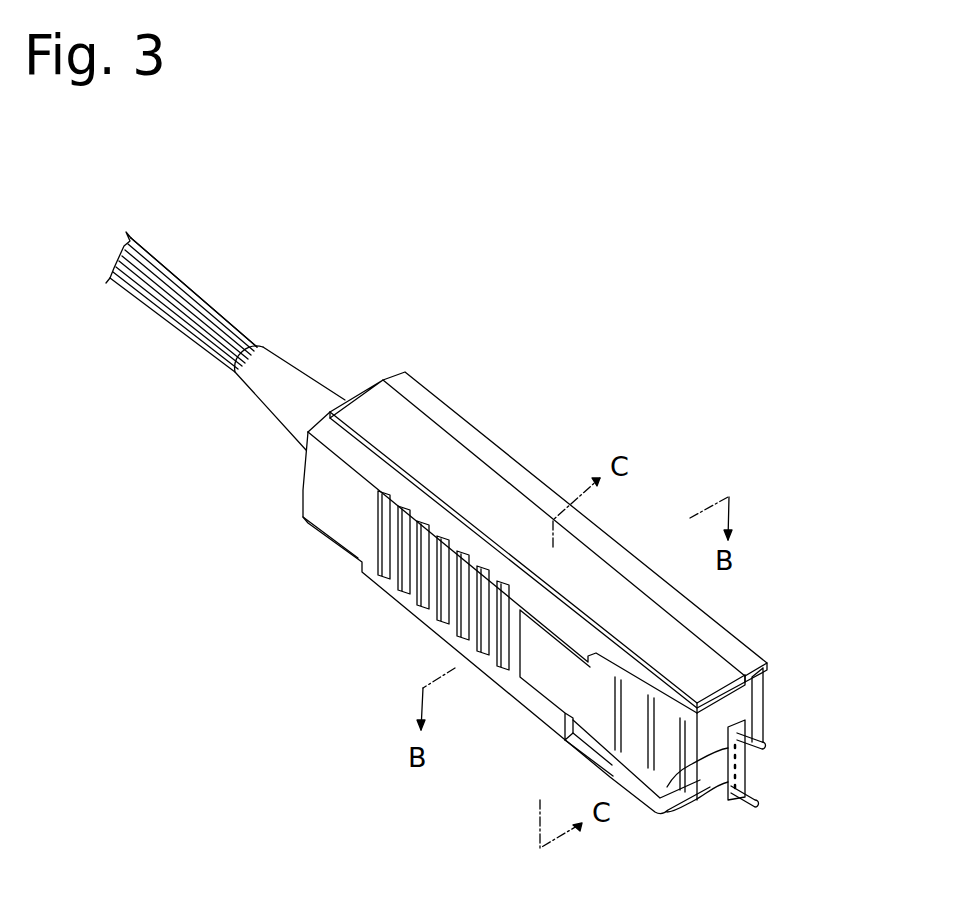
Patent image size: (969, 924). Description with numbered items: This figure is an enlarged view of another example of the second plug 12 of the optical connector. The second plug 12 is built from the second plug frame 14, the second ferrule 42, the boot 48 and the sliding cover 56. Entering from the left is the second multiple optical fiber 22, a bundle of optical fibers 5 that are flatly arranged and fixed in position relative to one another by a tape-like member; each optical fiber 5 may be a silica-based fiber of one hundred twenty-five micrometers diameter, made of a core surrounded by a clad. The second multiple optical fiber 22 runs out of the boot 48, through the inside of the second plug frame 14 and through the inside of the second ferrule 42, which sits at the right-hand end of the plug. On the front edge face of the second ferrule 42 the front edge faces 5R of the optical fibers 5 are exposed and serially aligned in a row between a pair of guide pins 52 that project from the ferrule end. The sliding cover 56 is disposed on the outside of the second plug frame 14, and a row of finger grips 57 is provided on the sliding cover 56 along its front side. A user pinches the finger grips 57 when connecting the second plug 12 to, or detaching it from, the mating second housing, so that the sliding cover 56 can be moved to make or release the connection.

The second plug 12 is at (292, 558).
The second plug frame 14 is at (570, 687).
The second multiple optical fiber 22 is at (175, 281).
The optical fiber 5 is at (227, 327).
The boot 48 is at (303, 390).
The sliding cover 56 is at (482, 487).
The finger grips 57 is at (450, 593).
The guide pins 52 is at (757, 795).
The second ferrule 42 is at (713, 787).
The front edge faces 5R is at (677, 778).